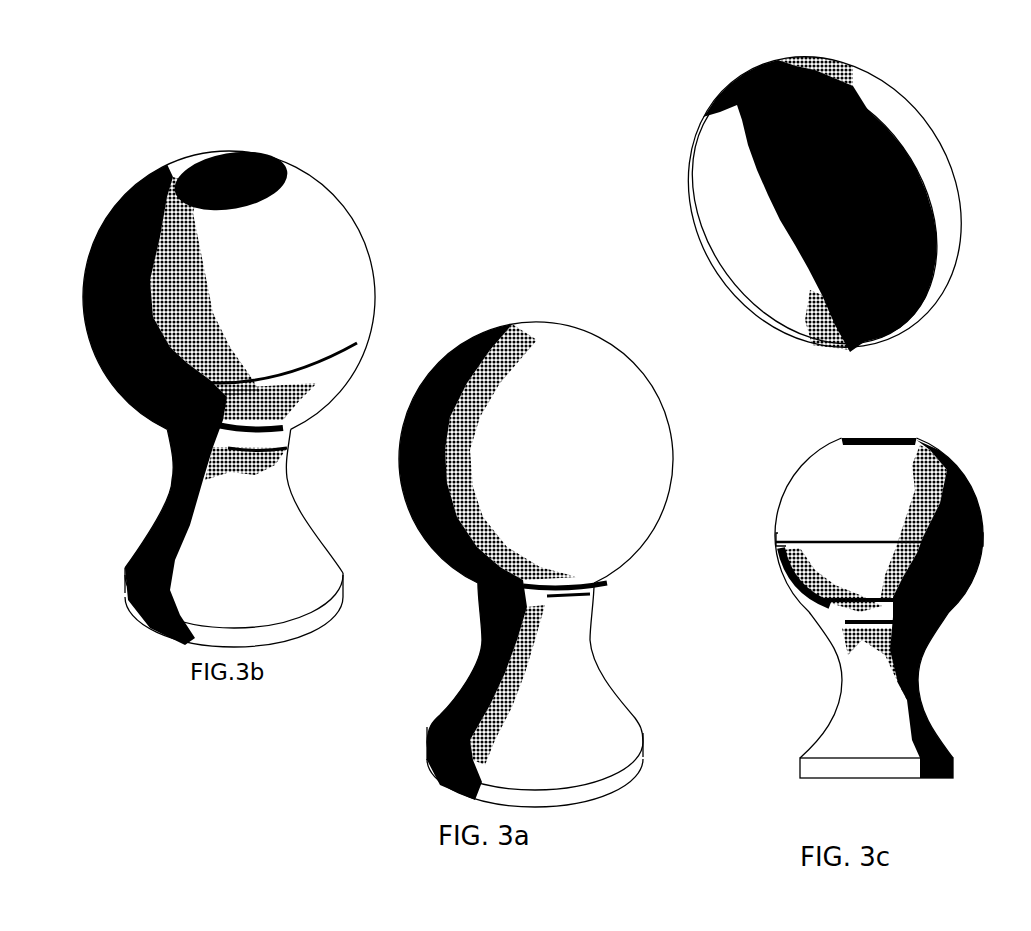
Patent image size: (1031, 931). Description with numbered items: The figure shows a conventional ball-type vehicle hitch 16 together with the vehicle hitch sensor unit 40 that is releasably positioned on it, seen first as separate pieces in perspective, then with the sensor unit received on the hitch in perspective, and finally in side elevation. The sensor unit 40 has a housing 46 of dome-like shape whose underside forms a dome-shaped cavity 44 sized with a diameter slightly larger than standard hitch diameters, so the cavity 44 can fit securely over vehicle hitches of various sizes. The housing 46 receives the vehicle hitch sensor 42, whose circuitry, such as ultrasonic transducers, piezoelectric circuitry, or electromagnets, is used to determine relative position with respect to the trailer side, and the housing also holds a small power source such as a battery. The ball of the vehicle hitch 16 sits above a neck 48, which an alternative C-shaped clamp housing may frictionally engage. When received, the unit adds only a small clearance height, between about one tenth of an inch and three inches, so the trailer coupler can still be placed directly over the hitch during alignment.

In FIG. 3A, the vehicle hitch 16 is at (517, 528).
In FIG. 3B, the vehicle hitch sensor unit 40 is at (347, 210).
In FIG. 3B, the vehicle hitch sensor 42 is at (253, 153).
In FIG. 3C, the vehicle hitch sensor 42 is at (903, 157).
In FIG. 3C, the dome-shaped cavity 44 is at (712, 178).
In FIG. 3C, the housing 46 is at (860, 70).
In FIG. 3B, the neck 48 is at (260, 493).
In FIG. 3A, the neck 48 is at (470, 676).
In FIG. 3C, the neck 48 is at (838, 667).